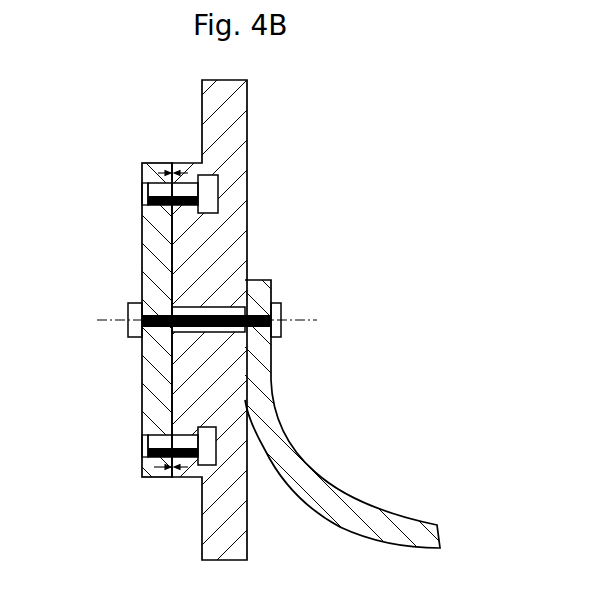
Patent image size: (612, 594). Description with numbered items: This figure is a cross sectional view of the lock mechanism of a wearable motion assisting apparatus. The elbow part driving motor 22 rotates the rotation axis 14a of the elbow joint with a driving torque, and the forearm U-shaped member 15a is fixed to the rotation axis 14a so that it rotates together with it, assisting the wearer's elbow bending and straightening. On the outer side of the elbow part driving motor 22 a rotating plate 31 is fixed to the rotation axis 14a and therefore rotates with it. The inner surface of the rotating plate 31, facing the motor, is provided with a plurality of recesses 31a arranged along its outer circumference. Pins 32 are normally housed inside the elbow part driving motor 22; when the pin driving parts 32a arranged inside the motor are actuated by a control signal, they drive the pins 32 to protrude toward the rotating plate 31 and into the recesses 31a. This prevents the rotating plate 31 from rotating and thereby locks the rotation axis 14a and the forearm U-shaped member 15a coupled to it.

The elbow part driving motor 22 is at (217, 118).
The rotating plate 31 is at (142, 223).
The recesses 31a is at (142, 188).
The pins 32 is at (168, 207).
The pin driving parts 32a is at (212, 192).
The rotation axis 14a is at (152, 330).
The forearm U-shaped member 15a is at (376, 516).